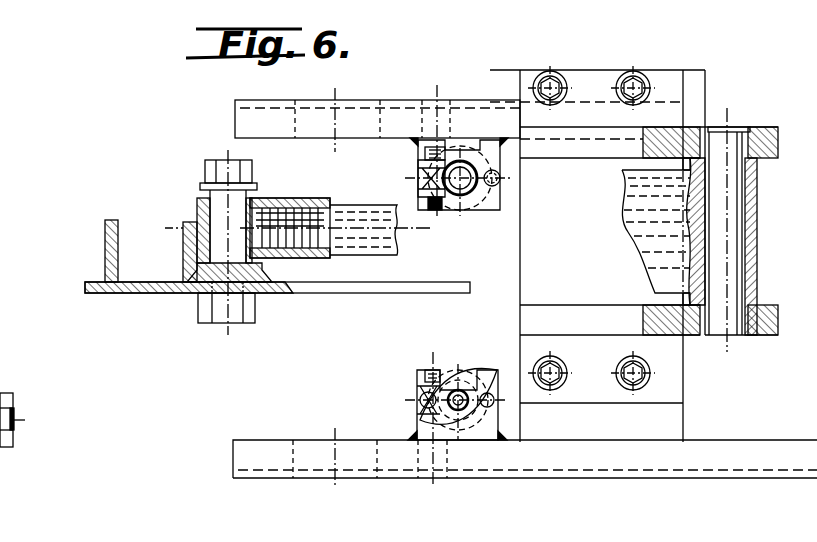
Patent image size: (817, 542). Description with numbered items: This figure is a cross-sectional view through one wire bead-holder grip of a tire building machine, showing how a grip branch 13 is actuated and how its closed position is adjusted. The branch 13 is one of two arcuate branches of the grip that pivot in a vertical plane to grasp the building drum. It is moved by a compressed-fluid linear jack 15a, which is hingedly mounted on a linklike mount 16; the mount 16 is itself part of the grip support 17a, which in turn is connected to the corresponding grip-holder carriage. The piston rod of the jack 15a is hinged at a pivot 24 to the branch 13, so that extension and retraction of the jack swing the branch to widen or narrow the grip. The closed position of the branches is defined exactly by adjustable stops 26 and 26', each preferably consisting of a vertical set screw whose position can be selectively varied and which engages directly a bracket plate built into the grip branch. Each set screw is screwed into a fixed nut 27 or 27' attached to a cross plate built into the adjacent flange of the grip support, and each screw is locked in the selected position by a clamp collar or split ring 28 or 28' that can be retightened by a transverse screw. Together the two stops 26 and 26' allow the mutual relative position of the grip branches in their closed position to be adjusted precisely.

The branch 13 is at (397, 293).
The compressed-fluid linear jack 15a is at (665, 238).
The linklike mount 16 is at (666, 322).
The grip support 17a is at (604, 460).
The pivot 24 is at (225, 290).
The adjustable stop 26 is at (412, 178).
The fixed nut 27 is at (458, 192).
The clamp collar or split ring 28 is at (432, 166).
The adjustable stop 26' is at (397, 398).
The fixed nut 27' is at (456, 387).
The clamp collar or split ring 28' is at (408, 413).